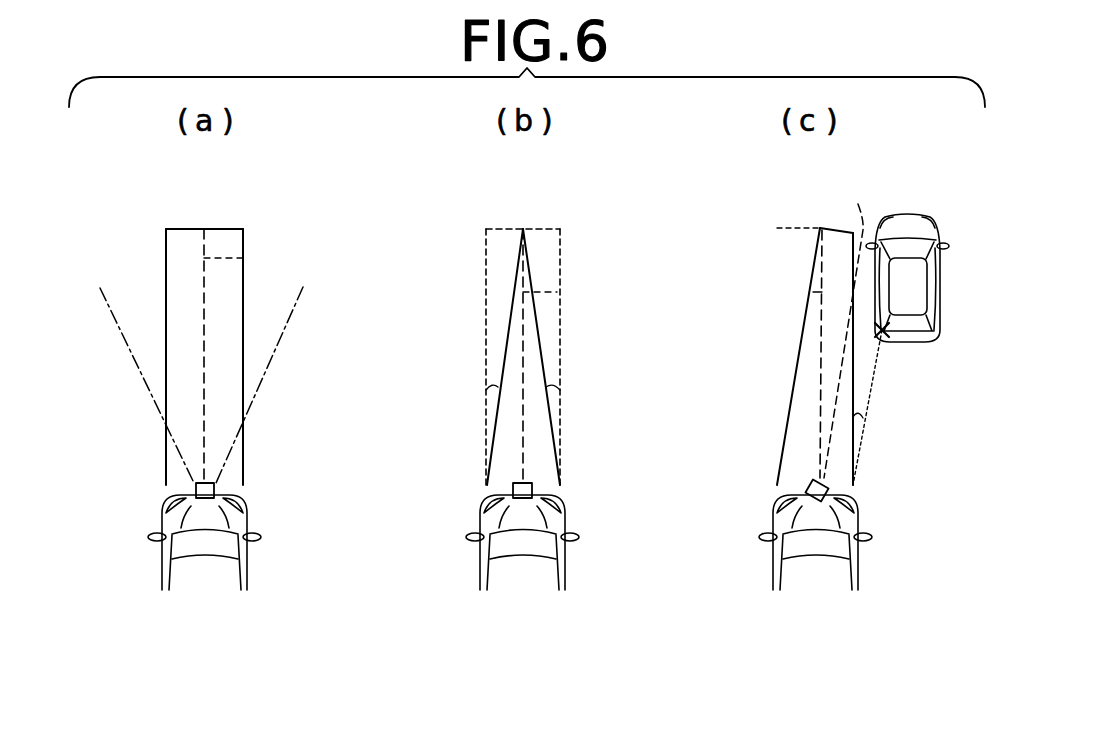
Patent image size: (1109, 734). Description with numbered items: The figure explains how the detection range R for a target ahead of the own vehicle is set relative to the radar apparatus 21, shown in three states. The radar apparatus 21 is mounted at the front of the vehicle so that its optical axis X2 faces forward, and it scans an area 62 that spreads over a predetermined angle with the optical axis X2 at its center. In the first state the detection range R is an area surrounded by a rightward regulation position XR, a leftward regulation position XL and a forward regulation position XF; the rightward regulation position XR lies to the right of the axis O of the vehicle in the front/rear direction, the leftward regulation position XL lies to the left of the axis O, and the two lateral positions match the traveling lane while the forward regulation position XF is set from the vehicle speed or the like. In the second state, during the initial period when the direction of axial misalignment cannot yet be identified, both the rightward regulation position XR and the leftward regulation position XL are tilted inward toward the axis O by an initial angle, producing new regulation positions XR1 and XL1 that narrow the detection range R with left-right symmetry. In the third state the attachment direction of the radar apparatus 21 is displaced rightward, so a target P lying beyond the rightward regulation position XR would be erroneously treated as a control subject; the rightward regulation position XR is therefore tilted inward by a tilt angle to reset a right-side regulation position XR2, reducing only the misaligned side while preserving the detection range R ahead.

The radar apparatus 21 is at (196, 492).
The area 62 is at (272, 322).
The detection range R is at (220, 422).
The forward regulation position XF is at (204, 229).
The leftward regulation position XL is at (166, 287).
The rightward regulation position XR is at (243, 284).
The new leftward regulation position XL1 is at (507, 316).
The new rightward regulation position XR1 is at (538, 313).
The regulation position on the right side XR2 is at (853, 363).
The optical axis X2 is at (294, 213).
The axis O is at (252, 256).
The target P is at (889, 346).